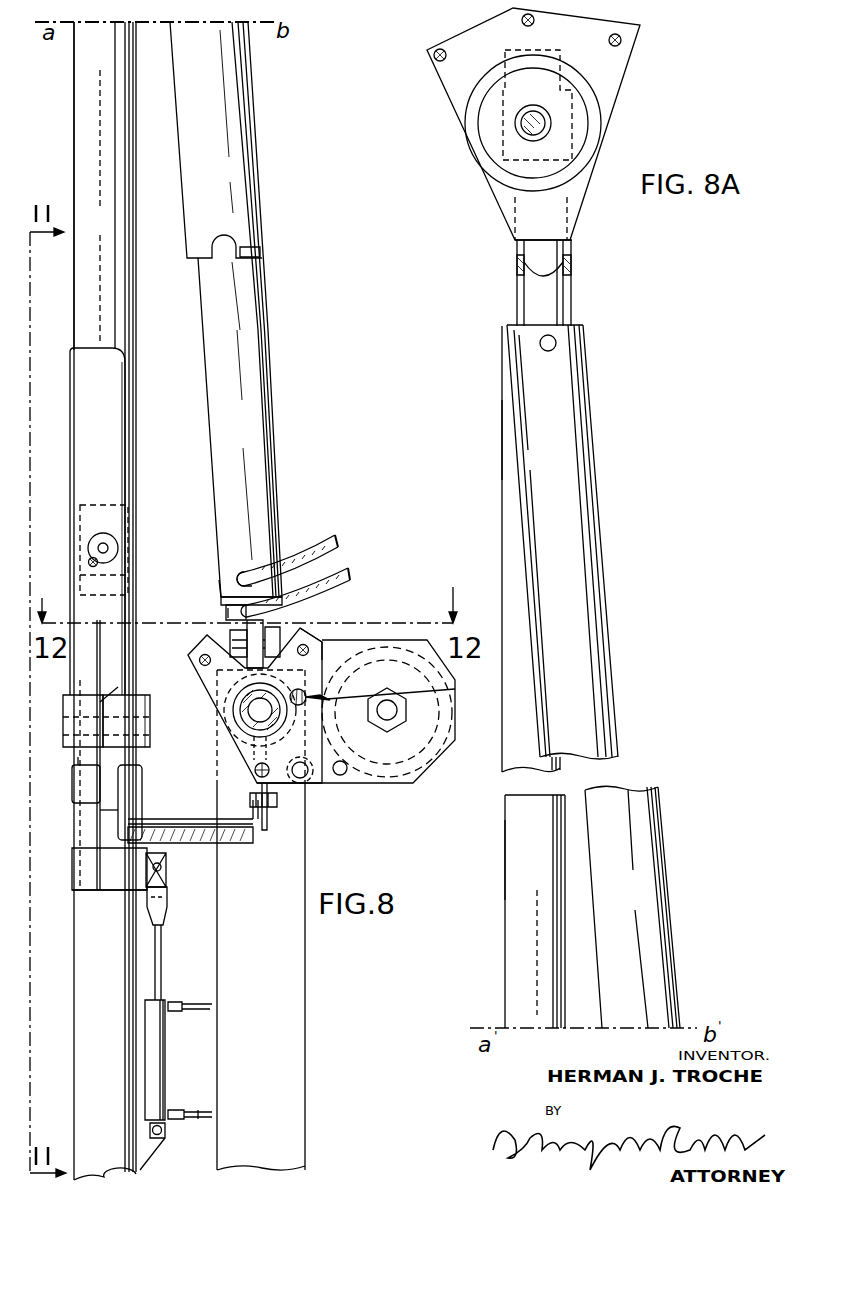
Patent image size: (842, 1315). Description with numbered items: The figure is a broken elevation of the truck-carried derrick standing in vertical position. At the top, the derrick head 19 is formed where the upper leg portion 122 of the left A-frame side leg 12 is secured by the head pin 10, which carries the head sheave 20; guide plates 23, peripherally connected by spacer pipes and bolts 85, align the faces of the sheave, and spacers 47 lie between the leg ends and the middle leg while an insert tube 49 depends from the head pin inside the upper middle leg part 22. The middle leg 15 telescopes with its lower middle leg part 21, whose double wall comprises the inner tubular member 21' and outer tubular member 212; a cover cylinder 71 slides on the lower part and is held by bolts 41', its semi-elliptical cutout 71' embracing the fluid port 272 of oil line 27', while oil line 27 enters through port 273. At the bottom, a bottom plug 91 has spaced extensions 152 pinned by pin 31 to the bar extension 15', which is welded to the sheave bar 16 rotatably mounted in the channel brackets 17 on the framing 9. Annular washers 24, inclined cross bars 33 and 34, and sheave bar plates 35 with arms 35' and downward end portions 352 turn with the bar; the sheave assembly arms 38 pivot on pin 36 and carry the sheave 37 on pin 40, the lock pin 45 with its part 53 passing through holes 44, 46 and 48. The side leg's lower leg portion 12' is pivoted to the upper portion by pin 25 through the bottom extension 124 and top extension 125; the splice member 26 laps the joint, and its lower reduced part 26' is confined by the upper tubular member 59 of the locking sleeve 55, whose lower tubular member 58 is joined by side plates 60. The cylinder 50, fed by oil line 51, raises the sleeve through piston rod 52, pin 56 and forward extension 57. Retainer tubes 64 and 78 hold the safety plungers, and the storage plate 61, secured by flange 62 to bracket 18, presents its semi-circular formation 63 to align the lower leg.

In FIG. 8, the framing 9 is at (305, 975).
In FIG. 8A, the head pin 10 is at (546, 124).
In FIG. 8, the left A-frame side leg 12 is at (86, 601).
In FIG. 8A, the left A-frame side leg 12 is at (506, 677).
In FIG. 8, the lower leg portion 12' is at (68, 868).
In FIG. 8, the upper leg portion 122 is at (53, 186).
In FIG. 8A, the upper leg portion 122 is at (469, 650).
In FIG. 8, the bottom extension 124 is at (127, 546).
In FIG. 8, the top extension 125 is at (127, 570).
In FIG. 8, the middle leg 15 is at (274, 309).
In FIG. 8A, the middle leg 15 is at (652, 676).
In FIG. 8, the bar extension 15' is at (201, 643).
In FIG. 8, the spaced extensions 152 is at (309, 628).
In FIG. 8, the sheave bar 16 is at (248, 722).
In FIG. 8, the channel bracket 17 is at (290, 712).
In FIG. 8, the bracket 18 is at (268, 822).
In FIG. 8A, the derrick head 19 is at (624, 78).
In FIG. 8A, the head sheave 20 is at (594, 143).
In FIG. 8, the lower middle leg part 21 is at (259, 427).
In FIG. 8, the inner tubular member 21' is at (235, 561).
In FIG. 8, the outer tubular member 212 is at (229, 583).
In FIG. 8A, the upper middle leg part 22 is at (578, 290).
In FIG. 8A, the guide plates 23 is at (610, 97).
In FIG. 8, the annular washer 24 is at (240, 752).
In FIG. 8, the pin 25 is at (108, 548).
In FIG. 8, the splice member 26 is at (129, 552).
In FIG. 8, the lower reduced part 26' is at (100, 699).
In FIG. 8, the oil line 27 is at (317, 578).
In FIG. 8, the oil line 27' is at (312, 540).
In FIG. 8, the fluid port 272 is at (283, 542).
In FIG. 8, the port 273 is at (189, 603).
In FIG. 8, the pin 31 is at (280, 624).
In FIG. 8, the inclined cross bar 33 is at (212, 676).
In FIG. 8, the inclined cross bar 34 is at (309, 651).
In FIG. 8, the sheave bar plate 35 is at (242, 705).
In FIG. 8, the plate arm 35' is at (353, 622).
In FIG. 8, the downwardly-extended end portion 352 is at (302, 794).
In FIG. 8, the pin 36 is at (308, 771).
In FIG. 8, the sheave 37 is at (428, 777).
In FIG. 8, the sheave assembly arms 38 is at (453, 706).
In FIG. 8, the pin 40 is at (398, 707).
In FIG. 8A, the bolts 41' is at (585, 341).
In FIG. 8, the hole 44 is at (312, 697).
In FIG. 8, the lock pin 45 is at (455, 690).
In FIG. 8, the hole 46 is at (258, 775).
In FIG. 8A, the spacer 47 is at (500, 95).
In FIG. 8, the hole 48 is at (343, 768).
In FIG. 8A, the insert tube 49 is at (575, 258).
In FIG. 8, the cylinder 50 is at (157, 1035).
In FIG. 8, the oil line 51 is at (200, 1117).
In FIG. 8, the piston rod 52 is at (162, 943).
In FIG. 8, the locking pin part 53 is at (305, 692).
In FIG. 8, the locking sleeve 55 is at (72, 892).
In FIG. 8, the pin 56 is at (166, 865).
In FIG. 8, the forward extension 57 is at (150, 875).
In FIG. 8, the lower tubular member 58 is at (72, 852).
In FIG. 8, the upper tubular member 59 is at (150, 713).
In FIG. 8, the side plate 60 is at (107, 815).
In FIG. 8, the storage plate 61 is at (238, 838).
In FIG. 8, the flange 62 is at (250, 796).
In FIG. 8, the semi-circular formation 63 is at (142, 793).
In FIG. 8, the retainer tube 64 is at (78, 760).
In FIG. 8, the cover cylinder 71 is at (237, 176).
In FIG. 8A, the cover cylinder 71 is at (615, 676).
In FIG. 8, the semi-elliptical cutout 71' is at (272, 245).
In FIG. 8, the retainer tube 78 is at (84, 695).
In FIG. 8A, the spacer pipes and bolts 85 is at (535, 21).
In FIG. 8, the bottom plug 91 is at (228, 615).